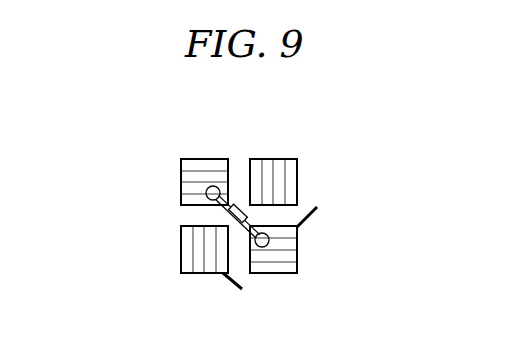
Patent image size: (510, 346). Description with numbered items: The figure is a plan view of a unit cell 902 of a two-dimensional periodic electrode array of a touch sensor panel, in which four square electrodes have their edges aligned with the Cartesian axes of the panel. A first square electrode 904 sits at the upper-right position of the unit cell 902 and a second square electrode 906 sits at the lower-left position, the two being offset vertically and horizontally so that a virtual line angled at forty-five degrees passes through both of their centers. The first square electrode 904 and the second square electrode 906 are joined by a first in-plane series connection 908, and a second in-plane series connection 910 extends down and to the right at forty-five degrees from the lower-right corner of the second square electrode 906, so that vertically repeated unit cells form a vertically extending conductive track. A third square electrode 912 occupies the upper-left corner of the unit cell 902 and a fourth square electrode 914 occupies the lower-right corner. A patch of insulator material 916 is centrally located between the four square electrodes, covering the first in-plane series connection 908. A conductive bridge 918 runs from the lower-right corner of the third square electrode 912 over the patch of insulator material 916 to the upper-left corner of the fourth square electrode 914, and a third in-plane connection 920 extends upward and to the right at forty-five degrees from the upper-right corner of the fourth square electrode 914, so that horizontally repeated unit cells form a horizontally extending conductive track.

The unit cell 902 is at (247, 109).
The first square electrode 904 is at (297, 160).
The second square electrode 906 is at (181, 226).
The first in-plane series connection 908 is at (226, 219).
The second in-plane series connection 910 is at (233, 284).
The third square electrode 912 is at (181, 160).
The fourth square electrode 914 is at (296, 258).
The patch of insulator material 916 is at (244, 212).
The conductive bridge 918 is at (237, 206).
The third in-plane connection 920 is at (306, 219).